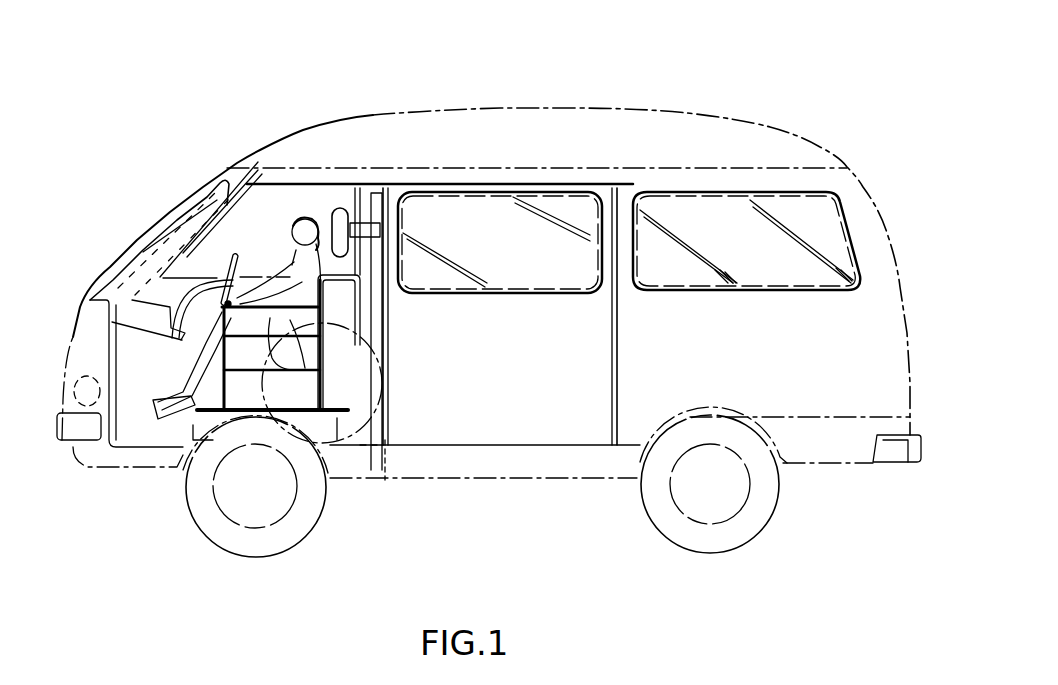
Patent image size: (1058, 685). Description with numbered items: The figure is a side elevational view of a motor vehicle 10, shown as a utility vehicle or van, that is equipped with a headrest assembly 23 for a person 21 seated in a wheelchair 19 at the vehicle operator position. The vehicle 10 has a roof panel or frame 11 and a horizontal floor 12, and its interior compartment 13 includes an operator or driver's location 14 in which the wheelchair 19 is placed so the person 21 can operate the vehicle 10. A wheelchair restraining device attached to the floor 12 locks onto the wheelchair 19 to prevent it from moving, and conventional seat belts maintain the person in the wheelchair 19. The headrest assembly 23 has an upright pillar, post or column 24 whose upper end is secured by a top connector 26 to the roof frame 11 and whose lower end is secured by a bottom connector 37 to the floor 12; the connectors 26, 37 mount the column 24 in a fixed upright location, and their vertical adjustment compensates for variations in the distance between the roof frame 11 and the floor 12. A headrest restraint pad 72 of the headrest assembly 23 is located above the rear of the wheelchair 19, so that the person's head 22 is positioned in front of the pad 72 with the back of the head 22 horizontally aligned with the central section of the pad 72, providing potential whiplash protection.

The motor vehicle 10 is at (643, 93).
The roof panel or frame 11 is at (417, 183).
The horizontal floor 12 is at (482, 447).
The interior compartment 13 is at (522, 375).
The operator or driver's location 14 is at (160, 290).
The wheelchair 19 is at (337, 430).
The person 21 is at (189, 362).
The person's head 22 is at (290, 223).
The headrest assembly 23 is at (336, 207).
The upright pillar, post or column 24 is at (361, 307).
The top connector 26 is at (367, 187).
The bottom connector 37 is at (390, 444).
The headrest restraint pad 72 is at (325, 200).